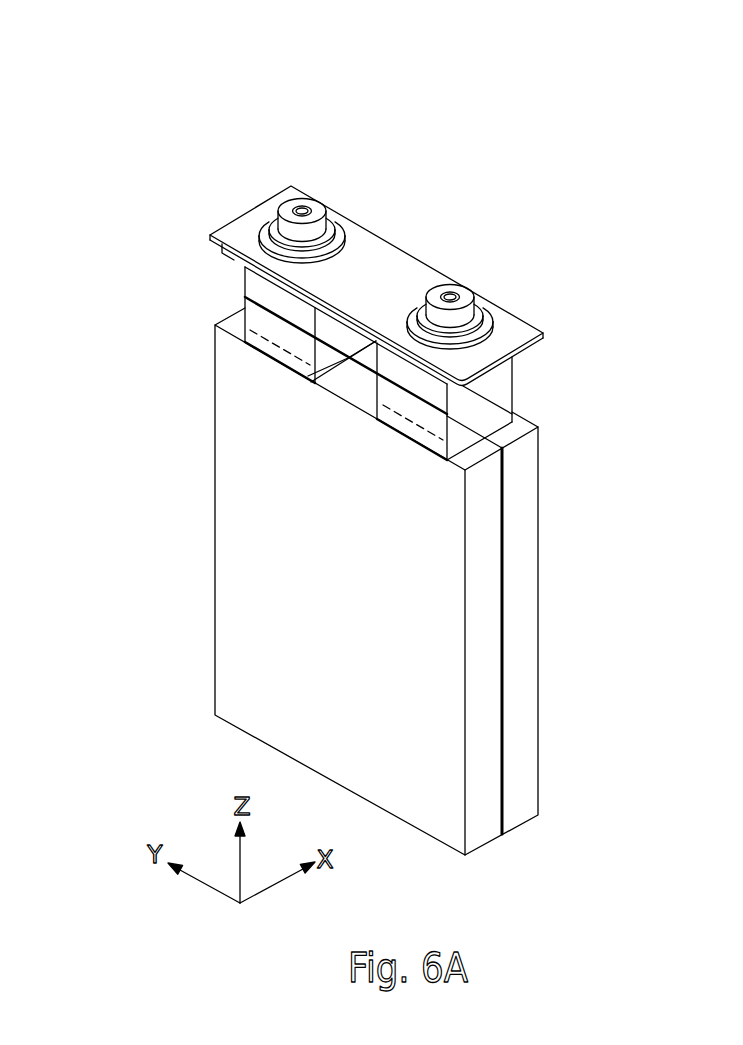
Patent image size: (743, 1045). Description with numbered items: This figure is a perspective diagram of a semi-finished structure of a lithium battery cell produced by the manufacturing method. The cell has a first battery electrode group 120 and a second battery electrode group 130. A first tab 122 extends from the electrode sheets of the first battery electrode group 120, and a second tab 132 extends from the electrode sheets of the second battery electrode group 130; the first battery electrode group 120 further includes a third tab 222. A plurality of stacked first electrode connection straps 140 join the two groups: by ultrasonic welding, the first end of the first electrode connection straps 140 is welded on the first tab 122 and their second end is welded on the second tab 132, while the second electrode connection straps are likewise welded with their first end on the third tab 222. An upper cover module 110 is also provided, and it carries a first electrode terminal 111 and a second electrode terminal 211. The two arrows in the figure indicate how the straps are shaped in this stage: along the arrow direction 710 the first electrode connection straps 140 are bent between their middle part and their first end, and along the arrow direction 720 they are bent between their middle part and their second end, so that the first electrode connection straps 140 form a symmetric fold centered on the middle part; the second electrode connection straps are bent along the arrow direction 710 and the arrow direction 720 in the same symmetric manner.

The upper cover module 110 is at (523, 327).
The first electrode terminal 111 is at (466, 296).
The first battery electrode group 120 is at (233, 604).
The first tab 122 is at (502, 448).
The second battery electrode group 130 is at (520, 531).
The second tab 132 is at (513, 378).
The first electrode connection straps 140 is at (500, 385).
The second electrode terminal 211 is at (320, 207).
The third tab 222 is at (258, 317).
The arrow direction 710 is at (455, 262).
The arrow direction 720 is at (323, 398).